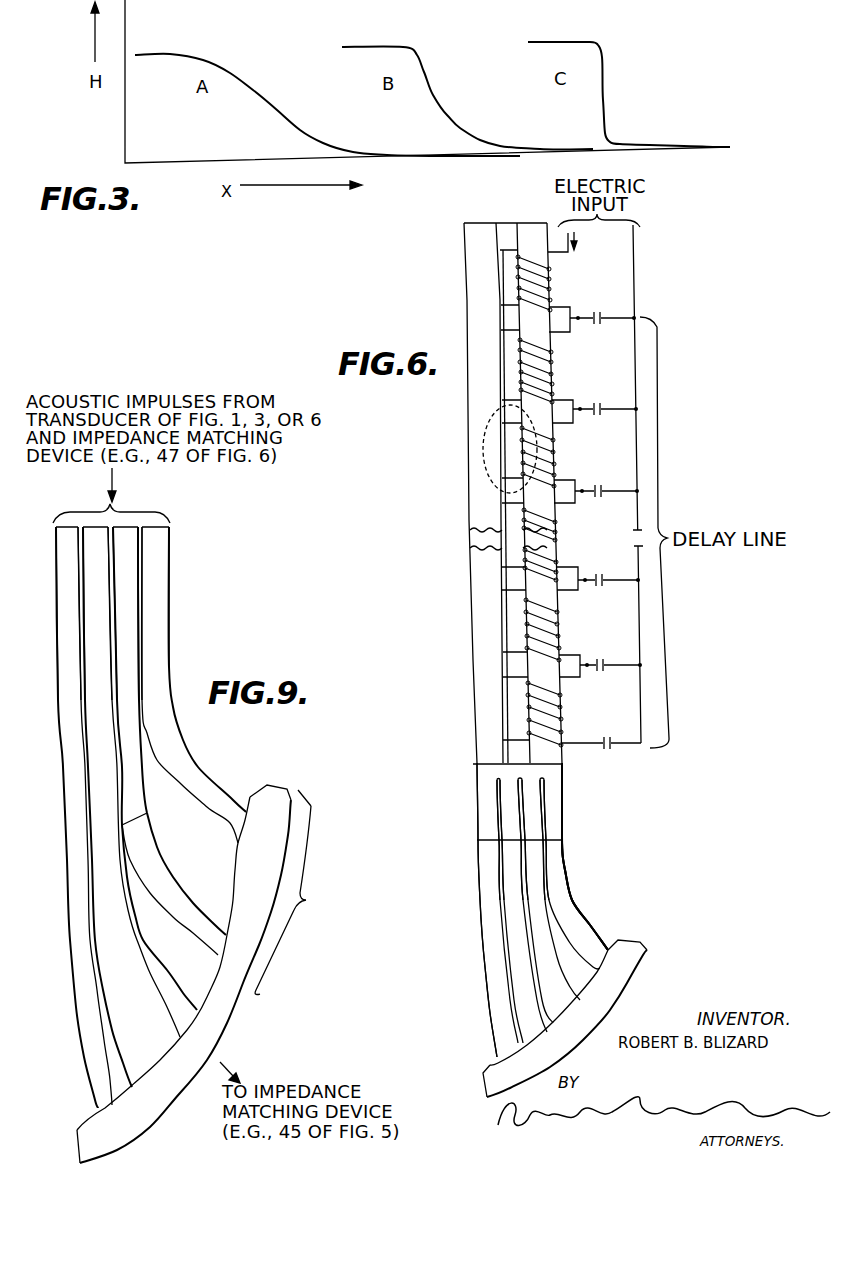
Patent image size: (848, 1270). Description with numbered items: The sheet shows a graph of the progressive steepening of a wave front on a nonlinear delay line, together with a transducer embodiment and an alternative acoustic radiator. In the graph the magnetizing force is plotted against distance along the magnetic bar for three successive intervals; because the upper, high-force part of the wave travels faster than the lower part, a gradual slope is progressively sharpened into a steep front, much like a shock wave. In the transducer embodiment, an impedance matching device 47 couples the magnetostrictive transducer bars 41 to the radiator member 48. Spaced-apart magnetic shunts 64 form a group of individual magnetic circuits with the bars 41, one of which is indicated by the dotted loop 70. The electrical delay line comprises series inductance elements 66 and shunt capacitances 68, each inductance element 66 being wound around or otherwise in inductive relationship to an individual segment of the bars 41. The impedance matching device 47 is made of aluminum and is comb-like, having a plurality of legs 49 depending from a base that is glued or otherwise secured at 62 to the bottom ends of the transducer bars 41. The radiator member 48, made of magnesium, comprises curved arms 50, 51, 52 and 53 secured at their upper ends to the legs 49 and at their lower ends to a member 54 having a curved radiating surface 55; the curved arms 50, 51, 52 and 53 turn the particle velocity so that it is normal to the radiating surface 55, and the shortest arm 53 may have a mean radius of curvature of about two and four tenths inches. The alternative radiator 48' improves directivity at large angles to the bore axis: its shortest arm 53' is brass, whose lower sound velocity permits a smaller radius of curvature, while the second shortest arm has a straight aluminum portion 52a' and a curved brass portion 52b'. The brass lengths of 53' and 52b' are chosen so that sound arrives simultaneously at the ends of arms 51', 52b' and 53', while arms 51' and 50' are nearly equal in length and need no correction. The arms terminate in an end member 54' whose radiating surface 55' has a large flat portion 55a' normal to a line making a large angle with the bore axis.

In FIG. 6, the transducer bars 41 is at (473, 716).
In FIG. 6, the impedance matching device 47 is at (565, 792).
In FIG. 6, the radiator member 48 is at (613, 893).
In FIG. 6, the legs 49 is at (512, 820).
In FIG. 6, the curved arm 50 is at (474, 910).
In FIG. 6, the curved arm 51 is at (493, 911).
In FIG. 6, the curved arm 52 is at (540, 930).
In FIG. 6, the shortest arm 53 is at (595, 866).
In FIG. 6, the member 54 is at (647, 931).
In FIG. 6, the radiating surface 55 is at (591, 1019).
In FIG. 6, the securing location 62 is at (480, 776).
In FIG. 6, the magnetic shunts 64 is at (510, 400).
In FIG. 6, the series inductance elements 66 is at (552, 366).
In FIG. 6, the shunt capacitances 68 is at (597, 577).
In FIG. 6, the dotted loop 70 is at (483, 457).
In FIG. 9, the radiator 48' is at (160, 613).
In FIG. 9, the arm 50' is at (102, 817).
In FIG. 9, the arm 51' is at (144, 807).
In FIG. 9, the straight portion 52a' is at (157, 686).
In FIG. 9, the curved portion 52b' is at (177, 911).
In FIG. 9, the shortest arm 53' is at (197, 685).
In FIG. 9, the end member 54' is at (282, 770).
In FIG. 9, the radiating surface 55' is at (192, 980).
In FIG. 9, the flat portion 55a' is at (308, 900).